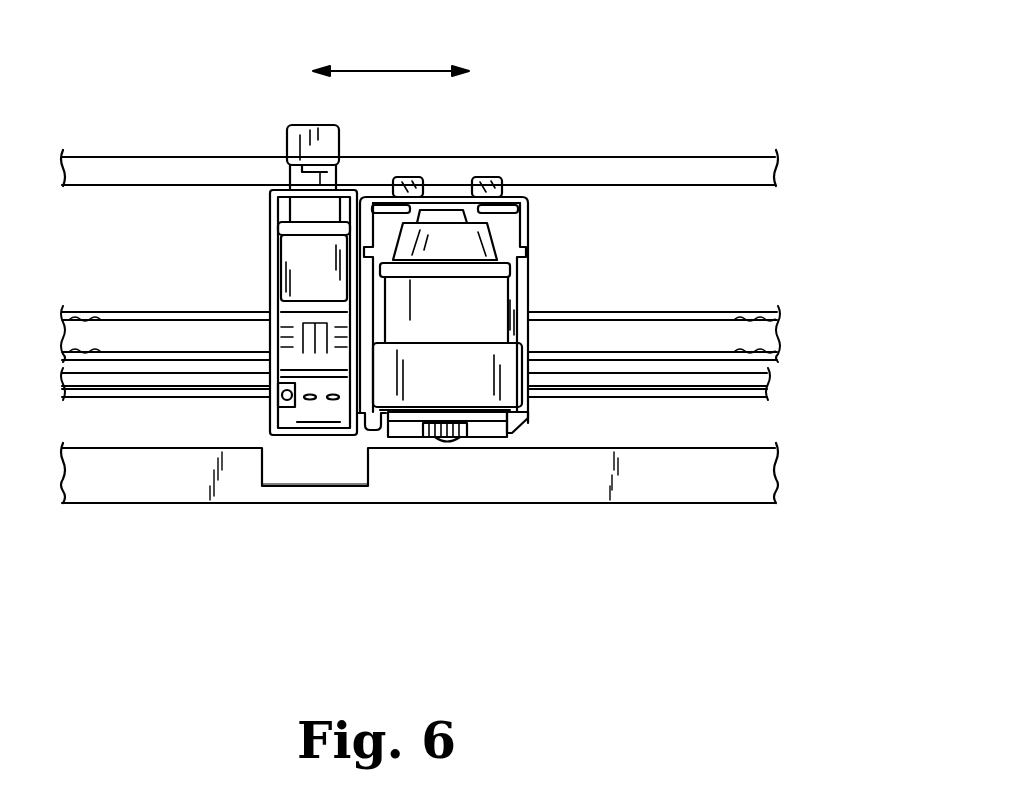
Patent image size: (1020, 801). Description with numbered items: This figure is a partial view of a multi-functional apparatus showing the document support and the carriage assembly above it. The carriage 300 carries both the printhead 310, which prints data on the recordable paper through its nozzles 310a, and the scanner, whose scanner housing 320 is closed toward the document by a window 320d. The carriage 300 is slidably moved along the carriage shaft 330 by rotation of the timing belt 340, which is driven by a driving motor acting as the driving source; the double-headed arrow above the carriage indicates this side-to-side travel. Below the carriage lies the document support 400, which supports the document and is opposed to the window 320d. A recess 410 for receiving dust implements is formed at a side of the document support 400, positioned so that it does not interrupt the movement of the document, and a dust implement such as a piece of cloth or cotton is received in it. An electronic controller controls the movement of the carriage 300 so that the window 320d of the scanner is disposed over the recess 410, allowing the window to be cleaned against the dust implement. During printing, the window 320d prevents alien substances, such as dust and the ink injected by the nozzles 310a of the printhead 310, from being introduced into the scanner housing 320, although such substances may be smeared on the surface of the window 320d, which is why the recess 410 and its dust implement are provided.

The carriage 300 is at (474, 151).
The printhead 310 is at (500, 230).
The nozzles 310a is at (445, 440).
The scanner housing 320 is at (292, 125).
The window 320d is at (323, 440).
The carriage shaft 330 is at (727, 403).
The timing belt 340 is at (727, 315).
The document support 400 is at (590, 488).
The recess for receiving dust implements 410 is at (277, 467).